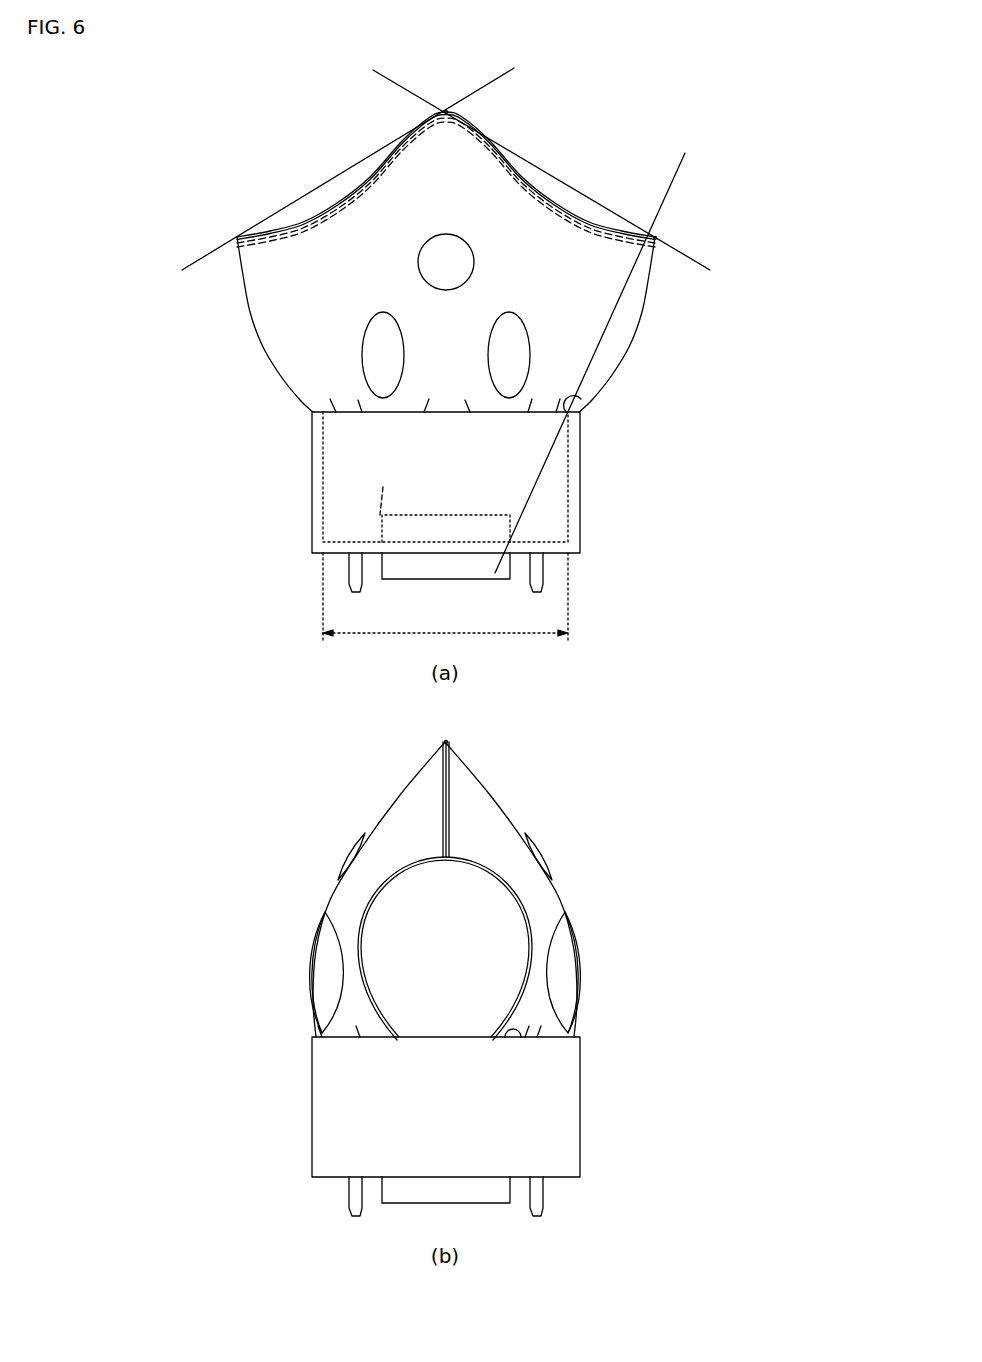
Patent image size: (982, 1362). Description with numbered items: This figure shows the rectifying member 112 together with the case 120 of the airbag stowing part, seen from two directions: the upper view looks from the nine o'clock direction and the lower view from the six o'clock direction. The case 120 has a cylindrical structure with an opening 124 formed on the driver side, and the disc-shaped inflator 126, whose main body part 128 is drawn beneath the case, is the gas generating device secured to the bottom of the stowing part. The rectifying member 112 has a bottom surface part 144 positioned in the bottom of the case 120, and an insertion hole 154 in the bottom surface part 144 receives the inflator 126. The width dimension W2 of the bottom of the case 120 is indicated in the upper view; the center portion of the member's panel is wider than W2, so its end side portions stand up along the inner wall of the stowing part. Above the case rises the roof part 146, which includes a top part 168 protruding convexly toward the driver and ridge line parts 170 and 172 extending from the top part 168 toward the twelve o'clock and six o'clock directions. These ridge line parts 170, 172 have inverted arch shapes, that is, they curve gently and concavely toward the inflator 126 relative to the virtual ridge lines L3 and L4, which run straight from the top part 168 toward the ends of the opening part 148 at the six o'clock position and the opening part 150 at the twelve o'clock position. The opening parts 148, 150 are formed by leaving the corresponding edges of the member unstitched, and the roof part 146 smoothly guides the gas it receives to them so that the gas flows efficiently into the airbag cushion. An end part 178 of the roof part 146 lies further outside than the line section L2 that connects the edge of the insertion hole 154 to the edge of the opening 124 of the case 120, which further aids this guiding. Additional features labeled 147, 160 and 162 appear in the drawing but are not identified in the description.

The rectifying member 112 is at (290, 152).
The case 120 is at (478, 832).
The opening 124 is at (580, 397).
The inflator 126 is at (480, 580).
The main body part 128 is at (383, 486).
The bottom surface part 144 is at (540, 540).
The roof part 146 is at (305, 222).
The side portion 147 is at (288, 353).
The opening part 148 is at (641, 319).
The opening part 150 is at (247, 311).
The insertion hole 154 is at (510, 542).
The opening 160 is at (505, 310).
The opening 162 is at (580, 968).
The top part 168 is at (447, 110).
The ridge line part 170 is at (526, 182).
The ridge line part 172 is at (368, 176).
The end part 178 is at (658, 237).
The line section L2 is at (597, 350).
The virtual ridge line L3 is at (530, 157).
The virtual ridge line L4 is at (357, 157).
The width dimension W2 is at (445, 596).